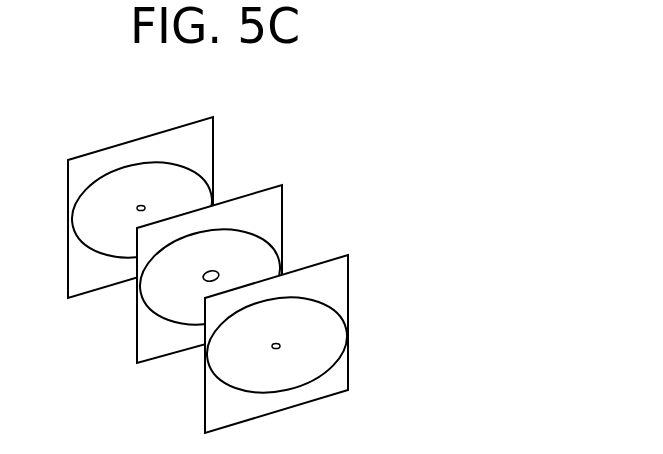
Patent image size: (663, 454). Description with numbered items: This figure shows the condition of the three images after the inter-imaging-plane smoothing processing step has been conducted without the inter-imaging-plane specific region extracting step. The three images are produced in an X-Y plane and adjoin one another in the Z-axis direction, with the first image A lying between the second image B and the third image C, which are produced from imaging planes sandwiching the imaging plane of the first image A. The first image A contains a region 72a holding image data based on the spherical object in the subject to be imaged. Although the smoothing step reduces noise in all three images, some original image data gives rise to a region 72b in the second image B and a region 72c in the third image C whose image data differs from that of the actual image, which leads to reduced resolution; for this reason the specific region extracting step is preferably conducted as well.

The first image A is at (228, 255).
The second image B is at (161, 195).
The third image C is at (296, 323).
The region 72a is at (212, 271).
The region 72b is at (141, 205).
The region 72c is at (277, 342).